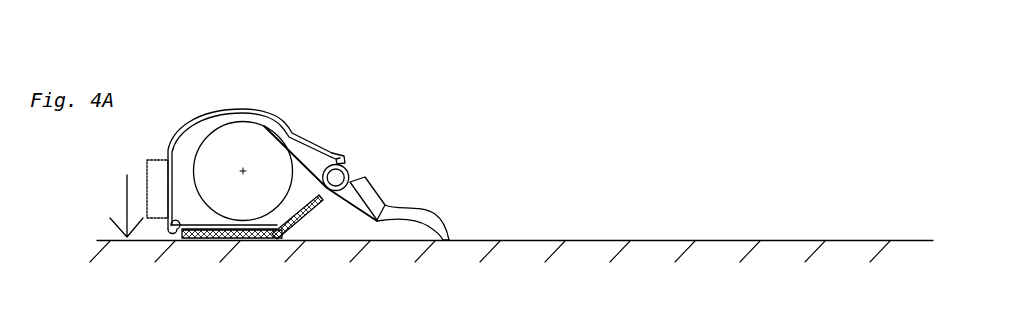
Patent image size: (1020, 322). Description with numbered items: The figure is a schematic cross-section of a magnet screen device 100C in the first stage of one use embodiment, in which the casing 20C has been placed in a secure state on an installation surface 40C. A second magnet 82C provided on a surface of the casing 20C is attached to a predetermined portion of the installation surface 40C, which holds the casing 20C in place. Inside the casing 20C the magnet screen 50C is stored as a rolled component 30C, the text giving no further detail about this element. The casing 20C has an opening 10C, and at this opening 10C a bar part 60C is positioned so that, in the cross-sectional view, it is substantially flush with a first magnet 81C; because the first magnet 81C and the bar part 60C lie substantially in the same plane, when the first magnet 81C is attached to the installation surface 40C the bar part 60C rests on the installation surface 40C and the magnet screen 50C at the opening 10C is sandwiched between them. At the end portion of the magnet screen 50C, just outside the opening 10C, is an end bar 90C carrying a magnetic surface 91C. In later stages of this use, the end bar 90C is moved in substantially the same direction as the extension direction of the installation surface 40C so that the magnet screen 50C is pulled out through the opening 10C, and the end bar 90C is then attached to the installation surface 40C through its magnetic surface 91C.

The tape application device 100C is at (412, 85).
The opening 10C is at (332, 200).
The casing 20C is at (264, 109).
The tape roll 30C is at (228, 150).
The installation surface 40C is at (574, 250).
The magnet screen 50C is at (332, 153).
The bar part 60C is at (349, 168).
The first magnet 81C is at (298, 224).
The second magnet 82C is at (231, 238).
The end bar 90C is at (382, 190).
The magnetic surface 91C is at (378, 208).